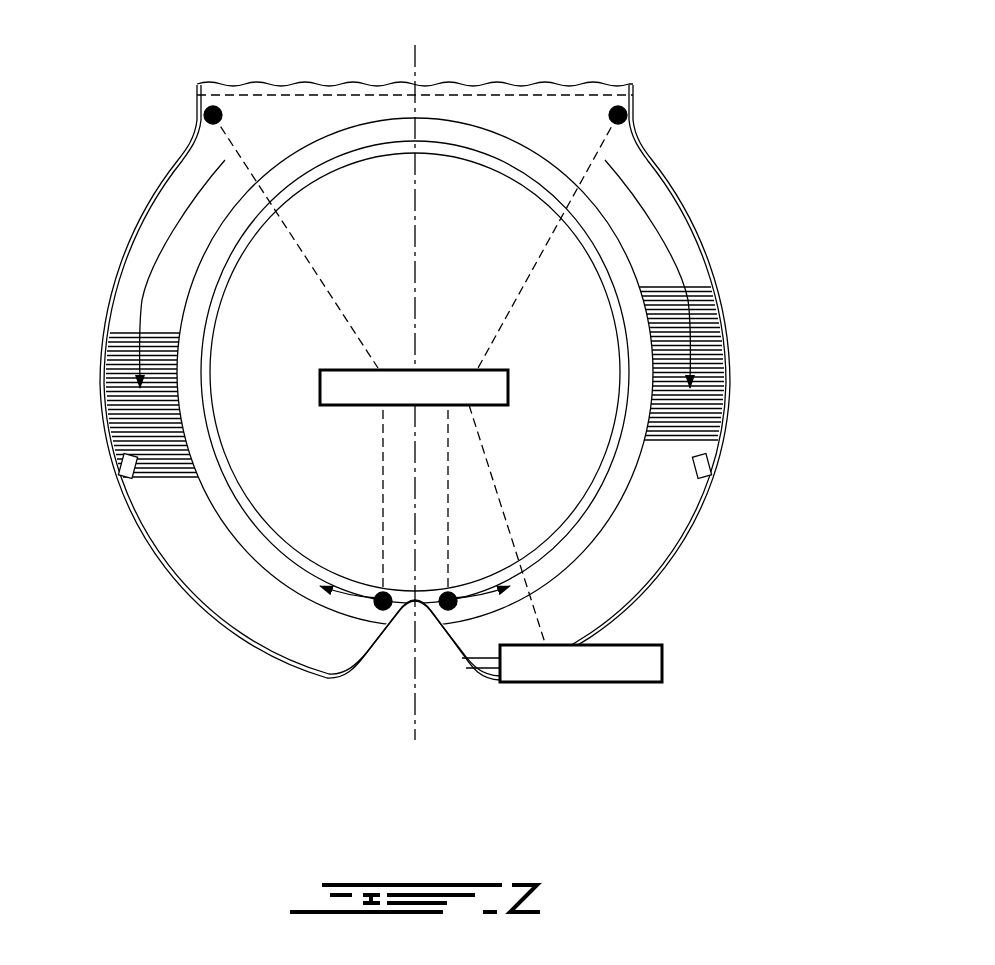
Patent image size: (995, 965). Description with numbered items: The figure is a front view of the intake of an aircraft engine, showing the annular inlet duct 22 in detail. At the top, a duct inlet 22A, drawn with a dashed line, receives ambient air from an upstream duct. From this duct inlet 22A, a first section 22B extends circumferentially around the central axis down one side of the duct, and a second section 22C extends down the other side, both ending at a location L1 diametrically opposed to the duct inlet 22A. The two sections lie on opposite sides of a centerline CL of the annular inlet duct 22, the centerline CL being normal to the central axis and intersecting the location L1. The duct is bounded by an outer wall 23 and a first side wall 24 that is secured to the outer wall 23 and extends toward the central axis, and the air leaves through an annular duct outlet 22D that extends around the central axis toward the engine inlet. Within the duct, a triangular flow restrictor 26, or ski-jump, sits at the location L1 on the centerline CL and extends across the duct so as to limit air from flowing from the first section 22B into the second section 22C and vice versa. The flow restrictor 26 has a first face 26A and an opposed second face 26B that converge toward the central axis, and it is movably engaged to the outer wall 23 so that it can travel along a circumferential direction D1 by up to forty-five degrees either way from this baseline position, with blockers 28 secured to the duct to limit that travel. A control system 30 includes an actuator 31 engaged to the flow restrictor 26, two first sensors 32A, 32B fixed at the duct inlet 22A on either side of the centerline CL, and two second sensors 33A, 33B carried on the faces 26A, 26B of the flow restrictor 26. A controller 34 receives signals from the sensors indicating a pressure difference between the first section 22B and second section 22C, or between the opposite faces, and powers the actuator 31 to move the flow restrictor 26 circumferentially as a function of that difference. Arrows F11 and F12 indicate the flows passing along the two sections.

The annular inlet duct 22 is at (780, 310).
The duct inlet 22A is at (522, 92).
The first section 22B is at (132, 400).
The second section 22C is at (687, 410).
The duct outlet 22D is at (267, 513).
The outer wall 23 is at (707, 260).
The first side wall 24 is at (233, 570).
The flow restrictor 26 is at (378, 632).
The first face 26A is at (388, 655).
The second face 26B is at (447, 657).
The blockers 28 is at (123, 460).
The control system 30 is at (729, 647).
The actuator 31 is at (592, 682).
The first sensor 32A is at (213, 106).
The first sensor 32B is at (618, 106).
The second sensor 33A is at (378, 592).
The second sensor 33B is at (452, 592).
The controller 34 is at (508, 387).
The first force F11 is at (160, 264).
The second force F12 is at (657, 222).
The centerline CL is at (425, 243).
The location L1 is at (411, 680).
The circumferential direction D1 is at (480, 600).